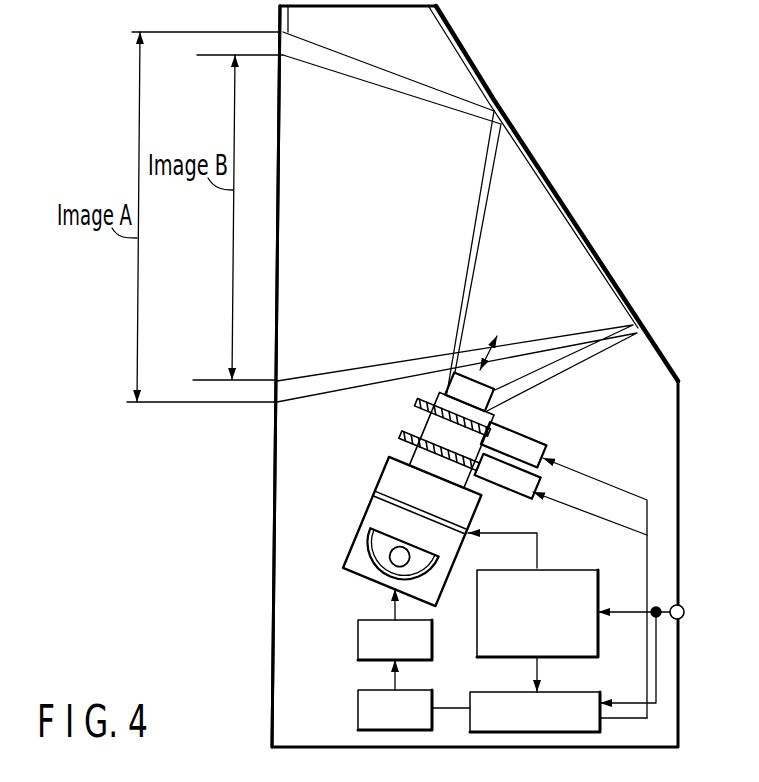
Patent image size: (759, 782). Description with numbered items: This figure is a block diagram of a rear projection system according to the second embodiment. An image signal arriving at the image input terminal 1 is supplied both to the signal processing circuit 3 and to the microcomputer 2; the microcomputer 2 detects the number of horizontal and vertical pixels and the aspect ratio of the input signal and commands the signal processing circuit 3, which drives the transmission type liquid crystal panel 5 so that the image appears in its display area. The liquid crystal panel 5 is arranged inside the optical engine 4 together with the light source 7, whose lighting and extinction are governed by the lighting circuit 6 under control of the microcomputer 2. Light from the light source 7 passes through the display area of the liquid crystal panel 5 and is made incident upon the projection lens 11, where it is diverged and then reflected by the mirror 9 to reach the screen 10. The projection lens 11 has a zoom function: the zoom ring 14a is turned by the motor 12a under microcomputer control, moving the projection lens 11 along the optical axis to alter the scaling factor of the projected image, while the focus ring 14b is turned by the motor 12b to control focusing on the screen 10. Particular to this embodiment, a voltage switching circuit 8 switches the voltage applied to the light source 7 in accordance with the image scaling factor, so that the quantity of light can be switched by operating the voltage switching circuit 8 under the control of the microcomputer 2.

The image input terminal 1 is at (684, 612).
The microcomputer 2 is at (588, 692).
The signal processing circuit 3 is at (570, 568).
The optical engine 4 is at (352, 545).
The liquid crystal panel 5 is at (375, 497).
The lighting circuit 6 is at (358, 640).
The light source 7 is at (382, 577).
The voltage switching circuit 8 is at (358, 708).
The mirror 9 is at (560, 196).
The screen 10 is at (280, 128).
The projection lens 11 is at (490, 412).
The motor 12a is at (549, 447).
The motor 12b is at (535, 499).
The zoom ring 14a is at (418, 405).
The focus ring 14b is at (403, 437).